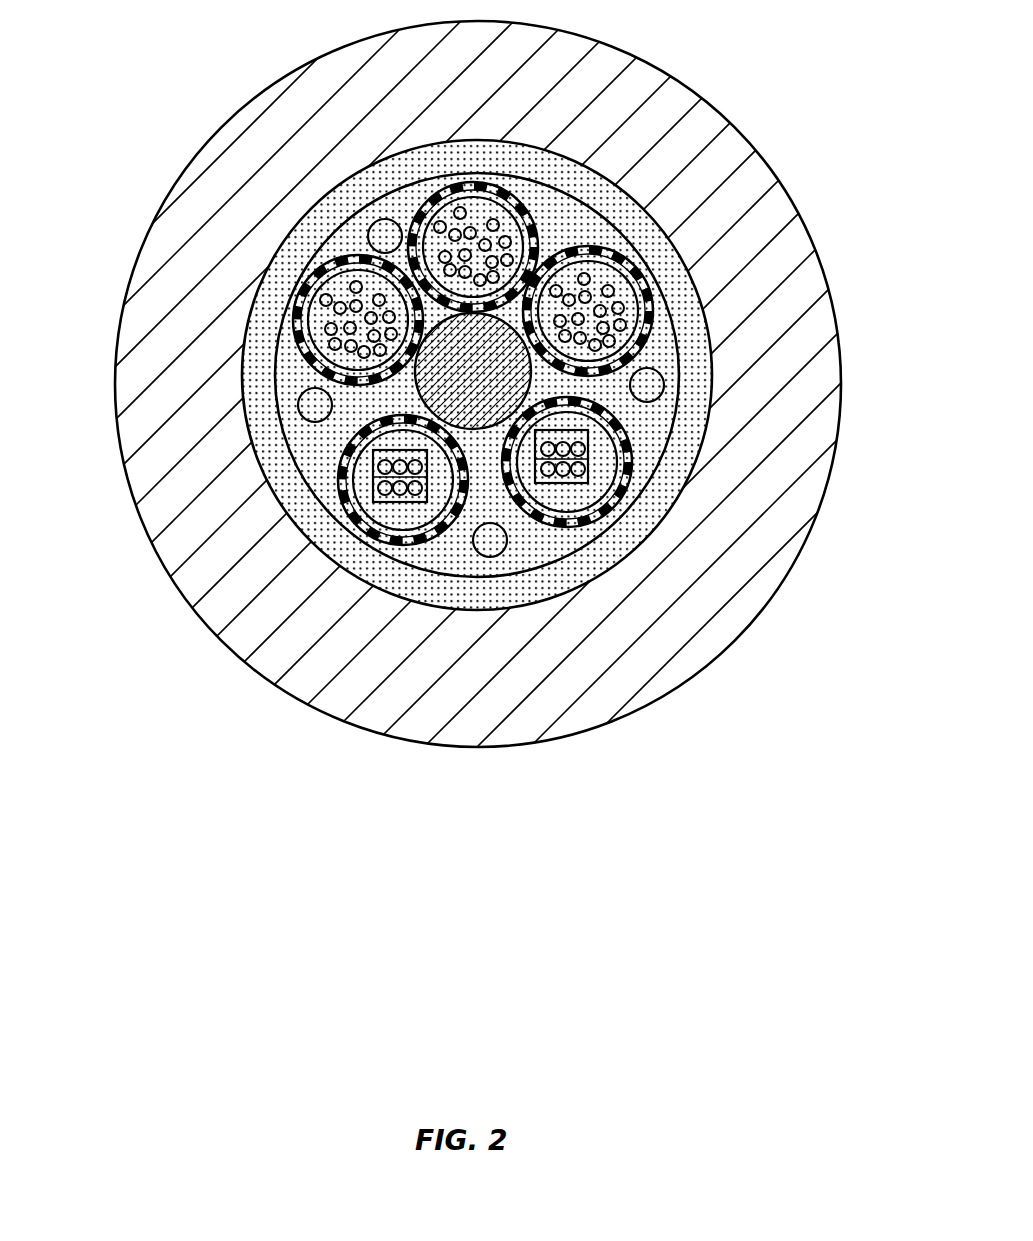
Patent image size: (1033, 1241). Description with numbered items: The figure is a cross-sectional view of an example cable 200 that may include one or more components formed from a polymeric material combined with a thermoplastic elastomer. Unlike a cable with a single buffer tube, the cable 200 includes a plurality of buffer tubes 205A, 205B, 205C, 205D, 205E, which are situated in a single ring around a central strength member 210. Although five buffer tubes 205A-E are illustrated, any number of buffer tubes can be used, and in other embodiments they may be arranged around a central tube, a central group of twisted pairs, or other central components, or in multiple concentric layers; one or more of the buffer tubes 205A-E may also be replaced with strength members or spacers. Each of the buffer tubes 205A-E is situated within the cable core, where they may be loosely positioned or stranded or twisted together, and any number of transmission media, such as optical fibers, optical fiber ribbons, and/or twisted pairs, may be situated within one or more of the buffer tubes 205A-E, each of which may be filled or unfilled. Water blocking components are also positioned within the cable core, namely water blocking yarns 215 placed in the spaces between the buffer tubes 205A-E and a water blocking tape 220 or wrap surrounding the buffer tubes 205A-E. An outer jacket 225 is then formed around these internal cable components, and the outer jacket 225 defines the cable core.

The cable 200 is at (238, 758).
The buffer tube 205A is at (490, 203).
The buffer tube 205B is at (598, 274).
The buffer tube 205C is at (627, 483).
The buffer tube 205D is at (335, 468).
The buffer tube 205E is at (285, 331).
The central strength member 210 is at (540, 392).
The water blocking yarns 215 is at (370, 231).
The water blocking tape 220 is at (627, 542).
The outer jacket 225 is at (607, 683).